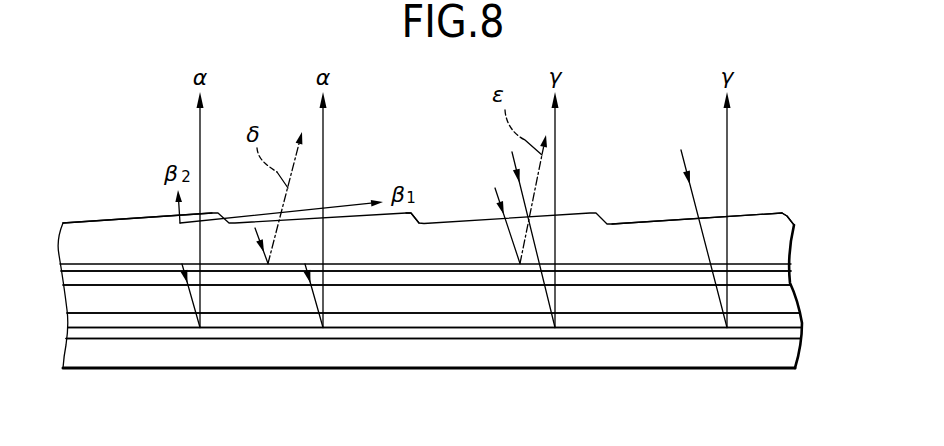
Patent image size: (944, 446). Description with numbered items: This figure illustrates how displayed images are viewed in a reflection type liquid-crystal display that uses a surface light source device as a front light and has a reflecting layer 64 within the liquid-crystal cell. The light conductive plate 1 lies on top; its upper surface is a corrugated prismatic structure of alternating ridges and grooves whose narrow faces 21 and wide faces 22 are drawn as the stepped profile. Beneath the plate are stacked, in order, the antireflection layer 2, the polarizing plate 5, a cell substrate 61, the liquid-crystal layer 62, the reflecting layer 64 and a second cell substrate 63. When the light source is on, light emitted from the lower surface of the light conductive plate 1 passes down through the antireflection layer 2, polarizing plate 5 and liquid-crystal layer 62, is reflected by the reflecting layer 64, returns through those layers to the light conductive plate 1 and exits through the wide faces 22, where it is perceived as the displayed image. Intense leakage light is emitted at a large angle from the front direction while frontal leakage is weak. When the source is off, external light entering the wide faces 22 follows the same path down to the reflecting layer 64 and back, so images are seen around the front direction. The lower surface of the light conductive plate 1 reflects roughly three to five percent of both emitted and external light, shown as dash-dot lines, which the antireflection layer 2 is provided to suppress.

The light conductive plate 1 is at (783, 243).
The antireflection layer 2 is at (793, 265).
The polarizing plate 5 is at (785, 276).
The narrow face 21 is at (419, 222).
The wide face 22 is at (92, 222).
The cell substrate 61 is at (790, 298).
The liquid-crystal layer 62 is at (797, 320).
The cell substrate 63 is at (755, 357).
The reflecting layer 64 is at (797, 333).